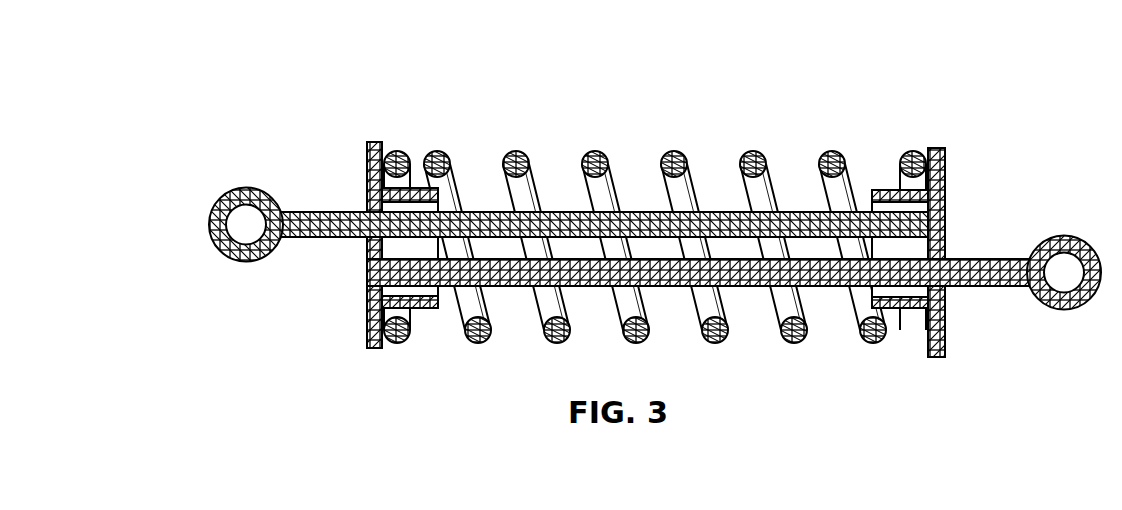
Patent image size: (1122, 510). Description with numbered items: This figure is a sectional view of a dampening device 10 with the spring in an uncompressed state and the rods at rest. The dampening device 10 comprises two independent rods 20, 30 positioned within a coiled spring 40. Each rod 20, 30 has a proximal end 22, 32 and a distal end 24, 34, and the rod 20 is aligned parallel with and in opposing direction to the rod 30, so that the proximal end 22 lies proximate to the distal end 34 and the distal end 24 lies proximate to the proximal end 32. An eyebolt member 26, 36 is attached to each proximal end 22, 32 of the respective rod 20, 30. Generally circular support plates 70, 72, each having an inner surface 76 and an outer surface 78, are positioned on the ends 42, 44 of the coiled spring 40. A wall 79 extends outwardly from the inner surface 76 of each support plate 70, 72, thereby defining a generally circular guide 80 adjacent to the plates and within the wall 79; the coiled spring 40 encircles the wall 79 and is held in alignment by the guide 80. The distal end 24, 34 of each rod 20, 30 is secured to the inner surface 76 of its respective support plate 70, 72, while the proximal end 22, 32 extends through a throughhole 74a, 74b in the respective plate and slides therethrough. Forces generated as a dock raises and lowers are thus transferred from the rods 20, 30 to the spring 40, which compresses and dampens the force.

The dampening device 10 is at (980, 102).
The rod 20 is at (338, 228).
The proximal end 22 is at (298, 238).
The distal end 24 is at (910, 228).
The eyebolt member 26 is at (207, 208).
The rod 30 is at (1007, 258).
The proximal end 32 is at (982, 273).
The distal end 34 is at (366, 298).
The eyebolt member 36 is at (1098, 288).
The spring 40 is at (584, 173).
The end of coiled spring 42 is at (407, 154).
The end of coiled spring 44 is at (908, 153).
The support plate 70 is at (368, 142).
The support plate 72 is at (937, 356).
The throughhole 74a is at (367, 210).
The throughhole 74b is at (948, 288).
The inner surface 76 is at (383, 345).
The outer surface 78 is at (366, 340).
The wall 79 is at (437, 308).
The guide 80 is at (884, 333).